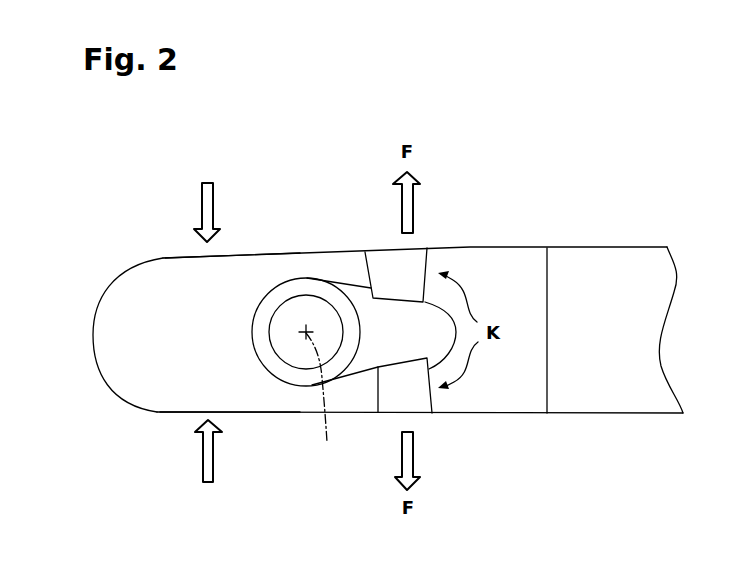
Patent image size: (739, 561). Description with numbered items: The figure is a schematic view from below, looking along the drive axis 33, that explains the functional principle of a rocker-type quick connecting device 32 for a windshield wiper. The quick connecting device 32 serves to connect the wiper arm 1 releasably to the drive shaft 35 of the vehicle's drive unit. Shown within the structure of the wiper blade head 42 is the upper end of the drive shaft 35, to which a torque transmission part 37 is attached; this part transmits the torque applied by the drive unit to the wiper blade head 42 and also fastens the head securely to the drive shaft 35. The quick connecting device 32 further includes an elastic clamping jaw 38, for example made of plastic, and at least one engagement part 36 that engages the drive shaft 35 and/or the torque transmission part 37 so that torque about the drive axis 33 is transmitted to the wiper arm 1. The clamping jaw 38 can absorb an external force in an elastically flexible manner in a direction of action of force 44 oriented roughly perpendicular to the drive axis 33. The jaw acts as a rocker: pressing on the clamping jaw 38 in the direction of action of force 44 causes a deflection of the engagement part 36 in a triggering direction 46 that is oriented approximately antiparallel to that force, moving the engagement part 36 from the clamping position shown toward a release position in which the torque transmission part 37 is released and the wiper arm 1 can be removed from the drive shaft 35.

The wiper arm 1 is at (630, 229).
The quick connecting device 32 is at (559, 151).
The drive axis 33 is at (318, 396).
The drive shaft 35 is at (312, 313).
The engagement part 36 is at (384, 263).
The torque transmission part 37 is at (293, 288).
The elastic clamping jaw 38 is at (163, 258).
The wiper blade head 42 is at (98, 275).
The direction of action of force 44 is at (202, 208).
The triggering direction 46 is at (413, 207).